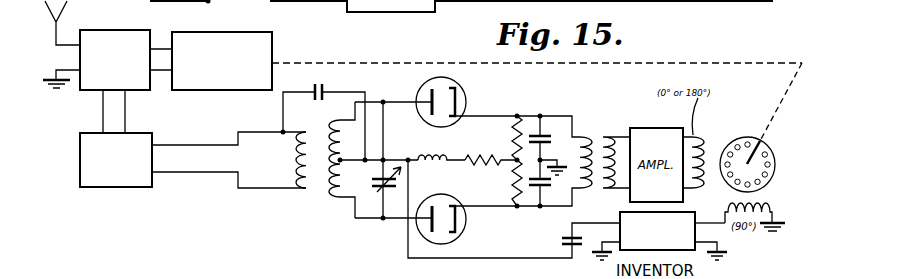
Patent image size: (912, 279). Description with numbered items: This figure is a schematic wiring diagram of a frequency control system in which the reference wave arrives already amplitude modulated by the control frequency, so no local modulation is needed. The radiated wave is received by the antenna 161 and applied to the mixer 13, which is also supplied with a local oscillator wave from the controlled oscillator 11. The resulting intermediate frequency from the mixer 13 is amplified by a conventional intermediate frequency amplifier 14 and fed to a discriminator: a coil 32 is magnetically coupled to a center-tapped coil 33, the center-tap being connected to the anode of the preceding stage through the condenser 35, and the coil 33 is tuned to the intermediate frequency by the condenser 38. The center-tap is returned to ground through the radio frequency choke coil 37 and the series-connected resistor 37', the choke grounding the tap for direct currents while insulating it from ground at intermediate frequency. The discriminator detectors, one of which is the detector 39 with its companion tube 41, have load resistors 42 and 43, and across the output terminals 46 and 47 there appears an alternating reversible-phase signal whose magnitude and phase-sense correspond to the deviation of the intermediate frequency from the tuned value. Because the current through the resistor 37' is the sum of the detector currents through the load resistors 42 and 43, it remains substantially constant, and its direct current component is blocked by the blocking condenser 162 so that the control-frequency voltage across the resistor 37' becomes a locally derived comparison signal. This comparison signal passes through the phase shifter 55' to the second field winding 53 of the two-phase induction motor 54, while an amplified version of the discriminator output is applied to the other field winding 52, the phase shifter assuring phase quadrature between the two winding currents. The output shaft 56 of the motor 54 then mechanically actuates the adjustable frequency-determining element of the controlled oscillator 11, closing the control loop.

The antenna 161 is at (65, 15).
The mixer 13 is at (137, 35).
The controlled oscillator 11 is at (220, 33).
The intermediate frequency amplifier 14 is at (80, 171).
The coil 32 is at (300, 198).
The center-tapped coil 33 is at (340, 199).
The condenser 35 is at (326, 88).
The radio frequency choke coil 37 is at (439, 147).
The resistor 37' is at (491, 150).
The condenser 38 is at (402, 191).
The detector 39 is at (449, 78).
The diode rectifier tube 41 is at (457, 243).
The load resistor 42 is at (516, 116).
The load resistor 43 is at (513, 204).
The output terminal 46 is at (571, 118).
The output terminal 47 is at (556, 209).
The field winding 52 is at (707, 137).
The second field winding 53 is at (770, 198).
The two-phase induction motor 54 is at (775, 157).
The phase shifter 55' is at (653, 230).
The output shaft 56 is at (778, 104).
The blocking condenser 162 is at (578, 248).